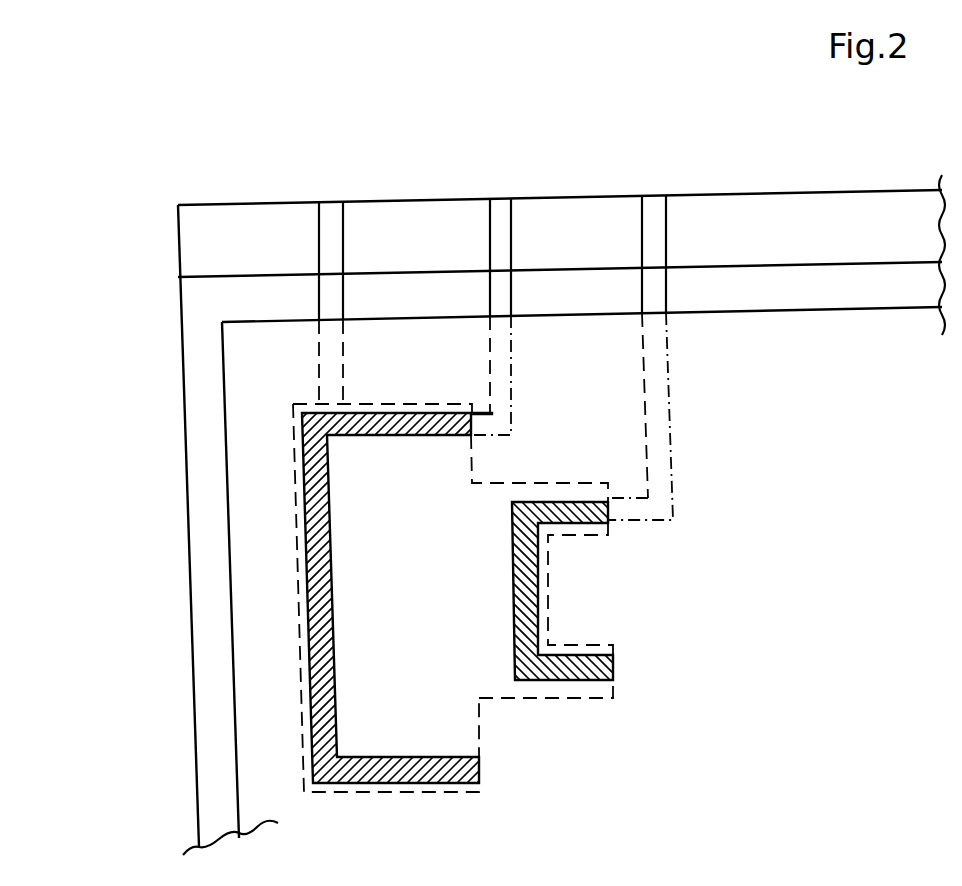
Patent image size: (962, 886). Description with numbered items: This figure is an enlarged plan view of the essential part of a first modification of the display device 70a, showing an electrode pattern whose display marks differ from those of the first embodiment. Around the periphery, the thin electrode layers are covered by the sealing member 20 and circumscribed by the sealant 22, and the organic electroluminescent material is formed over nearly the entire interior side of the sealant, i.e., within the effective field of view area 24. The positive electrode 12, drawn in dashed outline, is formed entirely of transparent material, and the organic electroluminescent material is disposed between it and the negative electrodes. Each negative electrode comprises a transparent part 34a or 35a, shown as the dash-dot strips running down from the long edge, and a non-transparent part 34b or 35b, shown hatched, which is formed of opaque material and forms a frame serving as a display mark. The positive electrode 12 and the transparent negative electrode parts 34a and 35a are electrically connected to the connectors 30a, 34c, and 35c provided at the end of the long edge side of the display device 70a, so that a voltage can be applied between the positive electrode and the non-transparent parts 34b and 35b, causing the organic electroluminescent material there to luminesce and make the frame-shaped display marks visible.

The display device 70a is at (148, 295).
The sealing member 20 is at (250, 277).
The sealant 22 is at (196, 418).
The effective field of view area 24 is at (247, 534).
The connector 30a is at (345, 252).
The connector 34c is at (511, 243).
The connector 35c is at (667, 240).
The transparent part of negative electrode 34a is at (514, 342).
The transparent part of negative electrode 35a is at (673, 368).
The non-transparent part of negative electrode 34b is at (328, 508).
The non-transparent part of negative electrode 35b is at (512, 560).
The positive electrode 12 is at (555, 700).